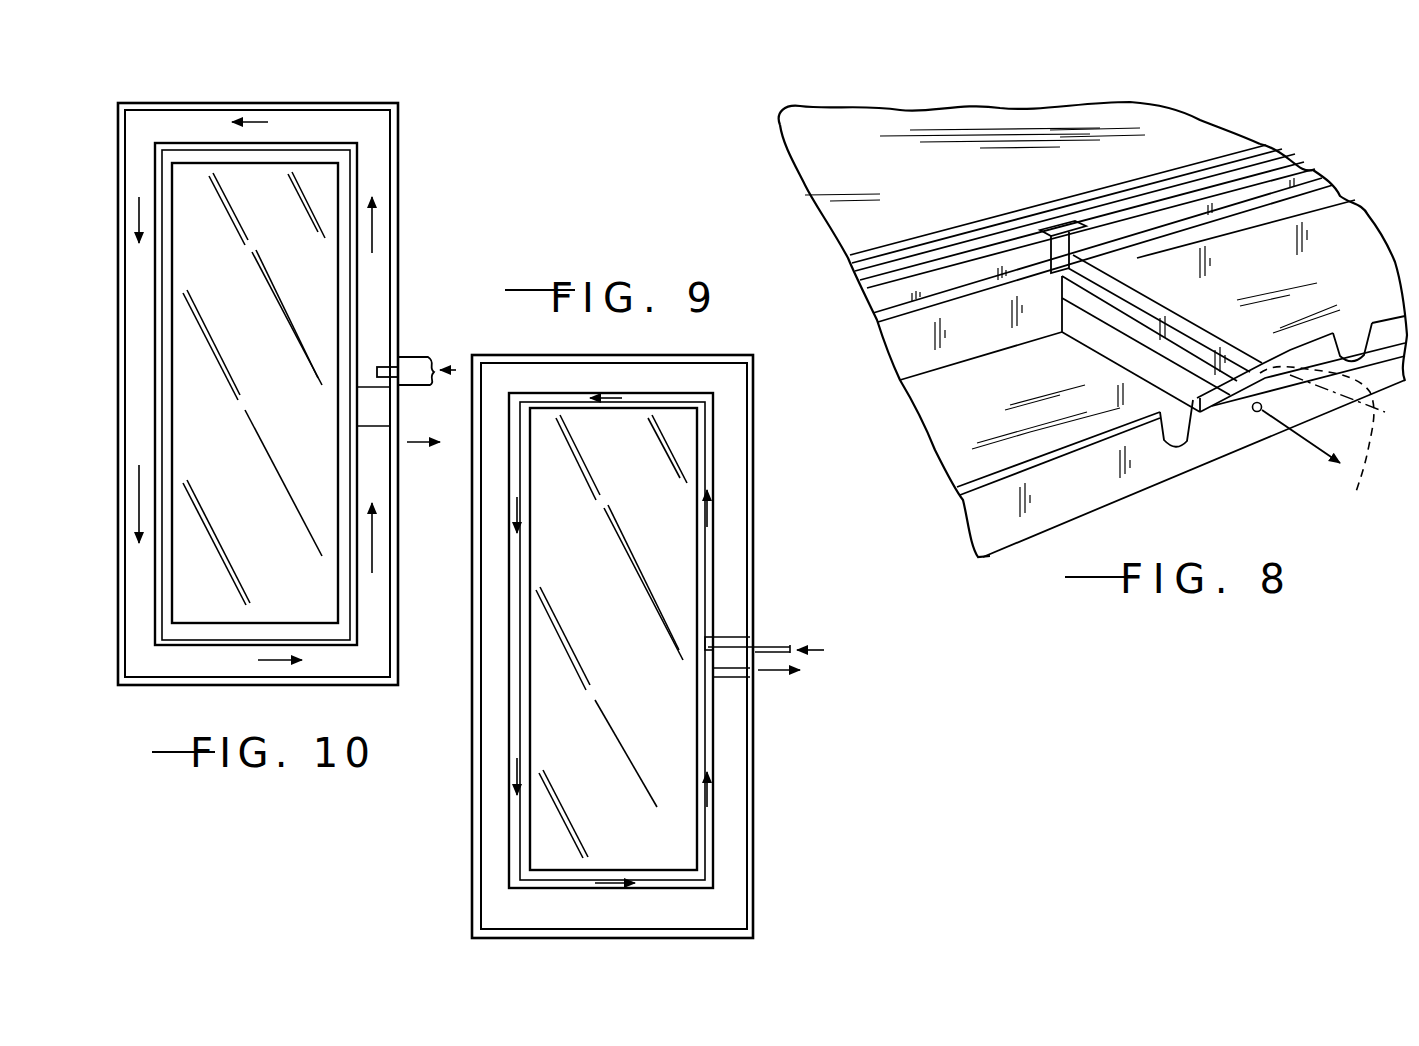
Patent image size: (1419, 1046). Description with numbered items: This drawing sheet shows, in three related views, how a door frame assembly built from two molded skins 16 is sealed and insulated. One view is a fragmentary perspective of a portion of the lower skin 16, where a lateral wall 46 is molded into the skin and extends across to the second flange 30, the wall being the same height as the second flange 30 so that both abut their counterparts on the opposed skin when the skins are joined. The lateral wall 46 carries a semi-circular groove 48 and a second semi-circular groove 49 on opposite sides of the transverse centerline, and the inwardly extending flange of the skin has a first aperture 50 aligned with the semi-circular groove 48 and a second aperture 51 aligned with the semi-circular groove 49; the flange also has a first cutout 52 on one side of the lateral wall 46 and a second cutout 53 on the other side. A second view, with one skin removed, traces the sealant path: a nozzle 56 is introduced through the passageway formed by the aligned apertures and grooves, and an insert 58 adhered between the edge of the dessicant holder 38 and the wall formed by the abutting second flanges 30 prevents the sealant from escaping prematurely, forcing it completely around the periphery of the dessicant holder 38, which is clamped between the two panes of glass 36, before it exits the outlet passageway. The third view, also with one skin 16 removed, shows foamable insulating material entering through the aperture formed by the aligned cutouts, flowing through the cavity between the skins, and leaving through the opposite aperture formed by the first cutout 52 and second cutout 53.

In FIG. 10, the skin 16 is at (400, 621).
In FIG. 9, the skin 16 is at (760, 797).
In FIG. 8, the skin 16 is at (1014, 553).
In FIG. 8, the second flange 30 is at (995, 346).
In FIG. 8, the pane of glass 36 is at (870, 172).
In FIG. 8, the dessicant holder 38 is at (932, 290).
In FIG. 8, the lateral wall 46 is at (1157, 372).
In FIG. 8, the semi-circular groove 48 is at (1152, 323).
In FIG. 8, the semi-circular groove 49 is at (1098, 249).
In FIG. 9, the first aperture 50 is at (757, 625).
In FIG. 8, the first aperture 50 is at (1253, 418).
In FIG. 9, the second aperture 51 is at (758, 680).
In FIG. 10, the first cutout 52 is at (402, 444).
In FIG. 9, the first cutout 52 is at (758, 700).
In FIG. 8, the first cutout 52 is at (1195, 422).
In FIG. 10, the second cutout 53 is at (382, 365).
In FIG. 9, the second cutout 53 is at (757, 612).
In FIG. 8, the second cutout 53 is at (1365, 352).
In FIG. 9, the nozzle 56 is at (772, 641).
In FIG. 8, the nozzle 56 is at (1322, 449).
In FIG. 9, the insert 58 is at (708, 665).
In FIG. 8, the insert 58 is at (1080, 228).